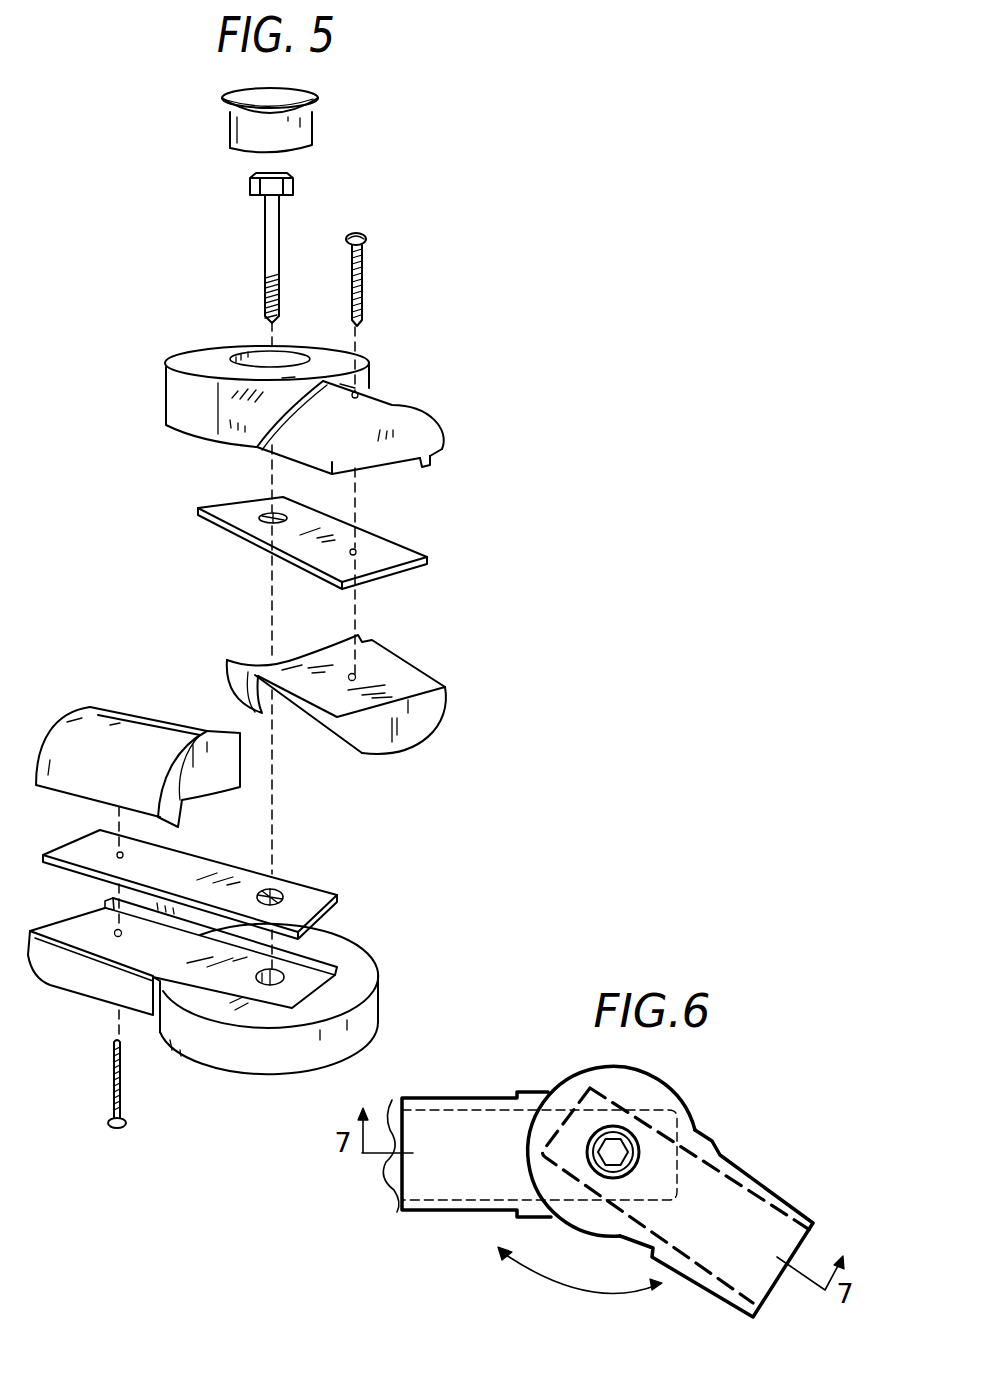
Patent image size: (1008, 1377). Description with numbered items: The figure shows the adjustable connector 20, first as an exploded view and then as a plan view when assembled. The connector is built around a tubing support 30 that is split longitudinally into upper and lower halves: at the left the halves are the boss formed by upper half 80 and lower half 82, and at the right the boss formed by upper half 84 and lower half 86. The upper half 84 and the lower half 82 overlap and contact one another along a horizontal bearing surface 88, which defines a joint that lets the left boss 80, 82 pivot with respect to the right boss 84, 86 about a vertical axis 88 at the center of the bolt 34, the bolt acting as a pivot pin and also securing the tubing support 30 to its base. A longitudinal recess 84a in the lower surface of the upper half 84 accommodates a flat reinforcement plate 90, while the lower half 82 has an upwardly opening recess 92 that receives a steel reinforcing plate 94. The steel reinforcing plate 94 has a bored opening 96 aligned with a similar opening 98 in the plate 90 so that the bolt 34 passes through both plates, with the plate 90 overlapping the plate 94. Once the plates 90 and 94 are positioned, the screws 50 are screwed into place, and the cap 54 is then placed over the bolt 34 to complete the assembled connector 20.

In FIG. 5, the adjustable connector 20 is at (135, 362).
In FIG. 6, the adjustable connector 20 is at (551, 1069).
In FIG. 6, the tubing support 30 is at (382, 1163).
In FIG. 5, the bolt 34 is at (268, 228).
In FIG. 6, the bolt 34 is at (617, 1153).
In FIG. 5, the screws 50 is at (362, 267).
In FIG. 5, the cap 54 is at (302, 125).
In FIG. 5, the upper half of tubing support (left boss) 80 is at (80, 727).
In FIG. 6, the upper half of tubing support (left boss) 80 is at (453, 1120).
In FIG. 5, the lower half of tubing support (left boss) 82 is at (85, 977).
In FIG. 5, the upper half of tubing support (right boss) 84 is at (415, 433).
In FIG. 6, the upper half of tubing support (right boss) 84 is at (723, 1205).
In FIG. 5, the longitudinal recess 84a is at (400, 460).
In FIG. 5, the lower half of tubing support (right boss) 86 is at (423, 710).
In FIG. 5, the horizontal bearing surface / vertical axis 88 is at (268, 590).
In FIG. 5, the flat reinforcement plate 90 is at (326, 546).
In FIG. 5, the upwardly opening recess 92 is at (87, 927).
In FIG. 5, the steel reinforcing plate 94 is at (173, 862).
In FIG. 5, the bored opening 96 is at (278, 890).
In FIG. 5, the opening 98 is at (268, 515).